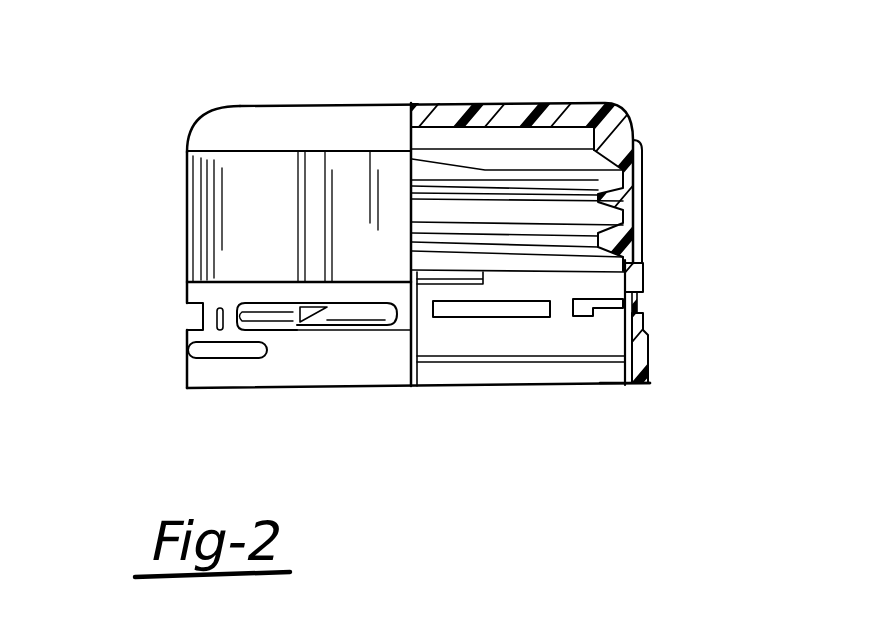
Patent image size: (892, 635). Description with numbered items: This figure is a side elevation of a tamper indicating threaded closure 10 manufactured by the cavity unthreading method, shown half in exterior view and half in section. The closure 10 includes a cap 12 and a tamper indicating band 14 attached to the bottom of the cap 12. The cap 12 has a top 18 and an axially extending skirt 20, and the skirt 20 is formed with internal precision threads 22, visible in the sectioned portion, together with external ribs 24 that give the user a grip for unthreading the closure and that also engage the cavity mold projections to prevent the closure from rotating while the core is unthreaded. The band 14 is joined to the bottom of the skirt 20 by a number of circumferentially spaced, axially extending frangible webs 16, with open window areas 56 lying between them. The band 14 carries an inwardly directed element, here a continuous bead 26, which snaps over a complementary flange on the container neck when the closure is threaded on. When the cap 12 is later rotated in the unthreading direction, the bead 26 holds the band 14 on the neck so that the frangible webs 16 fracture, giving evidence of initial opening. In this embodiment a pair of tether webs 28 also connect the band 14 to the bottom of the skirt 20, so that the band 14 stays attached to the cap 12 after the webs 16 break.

The threaded closure 10 is at (572, 90).
The cap 12 is at (176, 163).
The tamper indicating band 14 is at (650, 368).
The frangible webs 16 is at (643, 300).
The top 18 is at (357, 104).
The skirt 20 is at (176, 229).
The internal precision threads 22 is at (464, 279).
The external ribs 24 is at (187, 265).
The continuous bead 26 is at (618, 366).
The tether webs 28 is at (197, 320).
The open window areas 56 is at (481, 311).